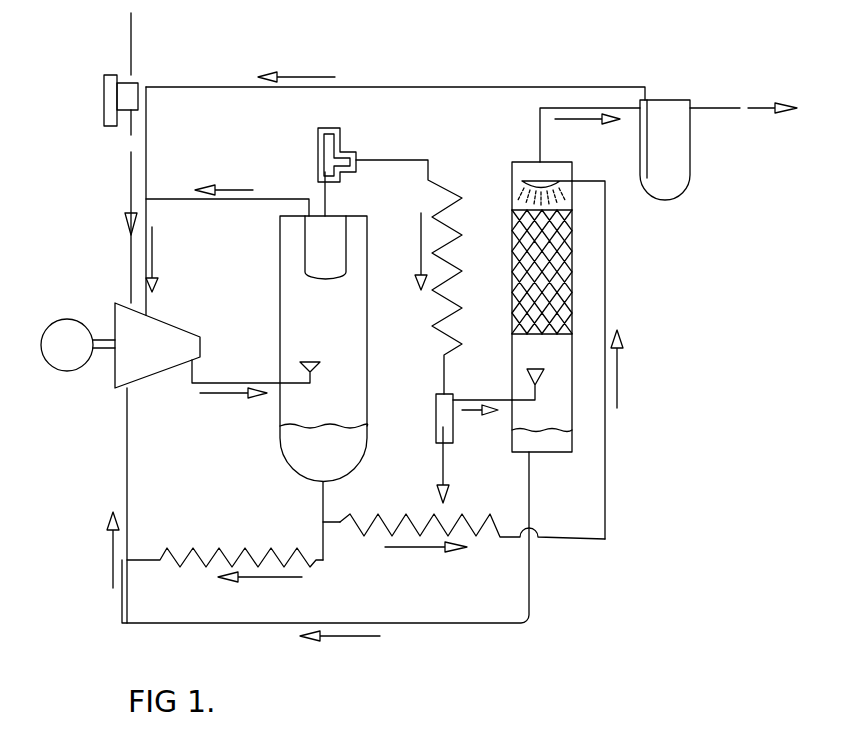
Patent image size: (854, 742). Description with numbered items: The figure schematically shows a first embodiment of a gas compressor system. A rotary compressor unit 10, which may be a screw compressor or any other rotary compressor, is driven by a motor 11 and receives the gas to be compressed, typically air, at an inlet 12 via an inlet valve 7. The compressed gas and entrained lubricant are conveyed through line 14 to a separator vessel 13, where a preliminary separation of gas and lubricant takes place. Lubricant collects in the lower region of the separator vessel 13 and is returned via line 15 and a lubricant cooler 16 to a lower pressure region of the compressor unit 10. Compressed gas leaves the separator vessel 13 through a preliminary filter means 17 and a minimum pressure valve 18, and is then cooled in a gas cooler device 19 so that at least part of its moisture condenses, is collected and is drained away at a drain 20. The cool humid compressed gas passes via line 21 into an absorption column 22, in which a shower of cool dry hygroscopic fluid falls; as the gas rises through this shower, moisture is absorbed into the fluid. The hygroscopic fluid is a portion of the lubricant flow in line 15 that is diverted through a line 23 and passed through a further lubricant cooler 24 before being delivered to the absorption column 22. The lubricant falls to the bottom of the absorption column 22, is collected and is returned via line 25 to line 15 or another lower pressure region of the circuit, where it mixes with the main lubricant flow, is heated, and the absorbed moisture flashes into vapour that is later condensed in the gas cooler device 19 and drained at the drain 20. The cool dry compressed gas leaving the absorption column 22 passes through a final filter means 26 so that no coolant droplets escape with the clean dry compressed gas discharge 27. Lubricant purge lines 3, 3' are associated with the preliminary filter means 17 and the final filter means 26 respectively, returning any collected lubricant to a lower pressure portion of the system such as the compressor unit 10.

The lubricant purge line 3 is at (227, 173).
The lubricant purge line 3' is at (395, 69).
The inlet valve 7 is at (100, 100).
The rotary compressor unit 10 is at (158, 338).
The motor 11 is at (72, 352).
The gas inlet 12 is at (127, 298).
The separator vessel 13 is at (278, 257).
The line 14 is at (233, 382).
The line 15 is at (128, 458).
The lubricant cooler 16 is at (197, 547).
The preliminary filter means 17 is at (328, 230).
The minimum pressure valve 18 is at (327, 145).
The gas cooler device 19 is at (462, 222).
The drain 20 is at (442, 458).
The line 21 is at (477, 400).
The absorption column 22 is at (574, 285).
The line 23 is at (607, 443).
The further lubricant cooler 24 is at (445, 530).
The line 25 is at (528, 578).
The final filter means 26 is at (670, 160).
The compressed gas discharge 27 is at (722, 108).